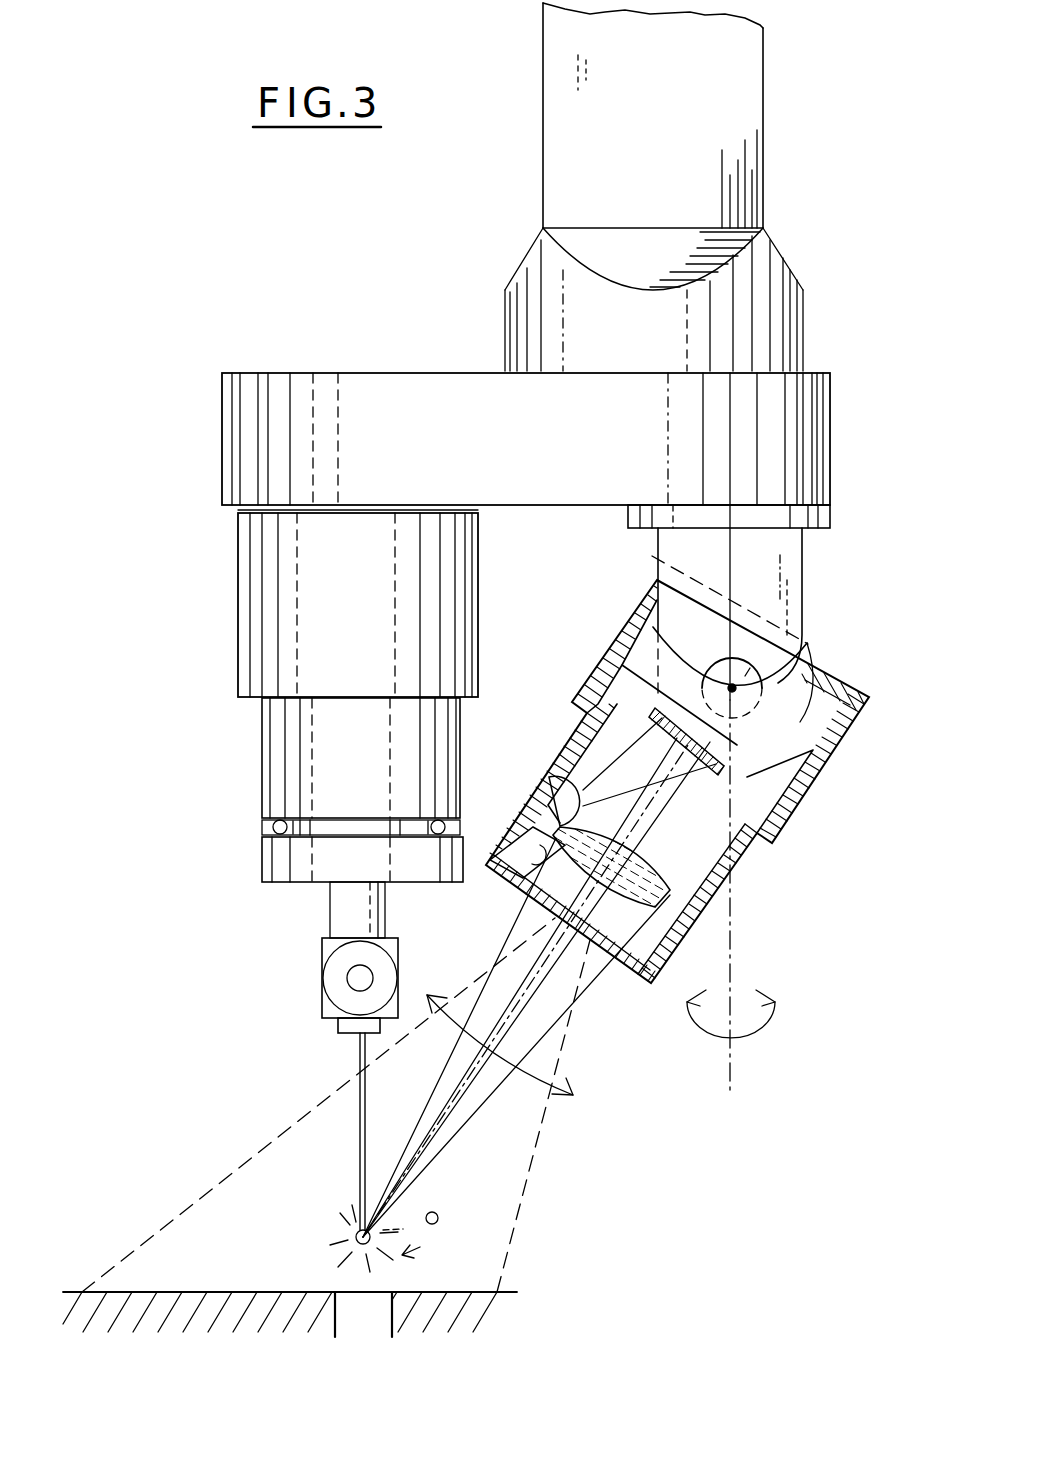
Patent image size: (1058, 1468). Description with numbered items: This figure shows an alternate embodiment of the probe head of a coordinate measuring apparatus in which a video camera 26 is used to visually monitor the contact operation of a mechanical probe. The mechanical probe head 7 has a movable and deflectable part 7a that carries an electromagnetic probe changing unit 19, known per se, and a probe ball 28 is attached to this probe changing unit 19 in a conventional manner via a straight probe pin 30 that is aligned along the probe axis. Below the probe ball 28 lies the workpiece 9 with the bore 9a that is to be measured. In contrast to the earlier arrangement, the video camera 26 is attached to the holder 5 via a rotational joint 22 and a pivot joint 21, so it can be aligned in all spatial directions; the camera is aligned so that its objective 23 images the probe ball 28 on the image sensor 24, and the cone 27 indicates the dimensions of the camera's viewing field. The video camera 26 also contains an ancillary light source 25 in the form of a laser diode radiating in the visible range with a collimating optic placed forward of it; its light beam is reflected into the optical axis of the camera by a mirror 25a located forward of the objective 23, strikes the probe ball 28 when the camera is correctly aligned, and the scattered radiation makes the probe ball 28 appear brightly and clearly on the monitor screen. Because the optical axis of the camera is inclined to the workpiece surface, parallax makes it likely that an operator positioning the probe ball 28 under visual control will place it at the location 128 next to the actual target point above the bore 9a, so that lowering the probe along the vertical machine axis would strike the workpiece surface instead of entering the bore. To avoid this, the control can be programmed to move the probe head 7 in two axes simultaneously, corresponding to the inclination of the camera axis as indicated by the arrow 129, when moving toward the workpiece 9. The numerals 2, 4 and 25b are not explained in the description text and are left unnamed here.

The optical probe head housing 2 is at (808, 646).
The quill / spindle of measuring machine 4 is at (740, 118).
The holder 5 is at (822, 418).
The mechanical probe head 7 is at (248, 607).
The movable and deflectable part of the probe head 7a is at (268, 782).
The workpiece 9 is at (225, 1292).
The bore 9a is at (372, 1307).
The electromagnetic probe changing unit 19 is at (275, 865).
The pivot joint 21 is at (766, 670).
The rotational joint 22 is at (828, 512).
The objective 23 is at (572, 785).
The image sensor 24 is at (708, 774).
The ancillary light source 25 is at (528, 852).
The mirror 25a is at (556, 1020).
The light beam 25b is at (522, 1032).
The video camera 26 is at (776, 808).
The cone 27 is at (518, 1207).
The probe ball 28 is at (357, 1233).
The straight probe pin 30 is at (355, 1062).
The location next to the actual target point 128 is at (437, 1224).
The arrow 129 is at (420, 1248).